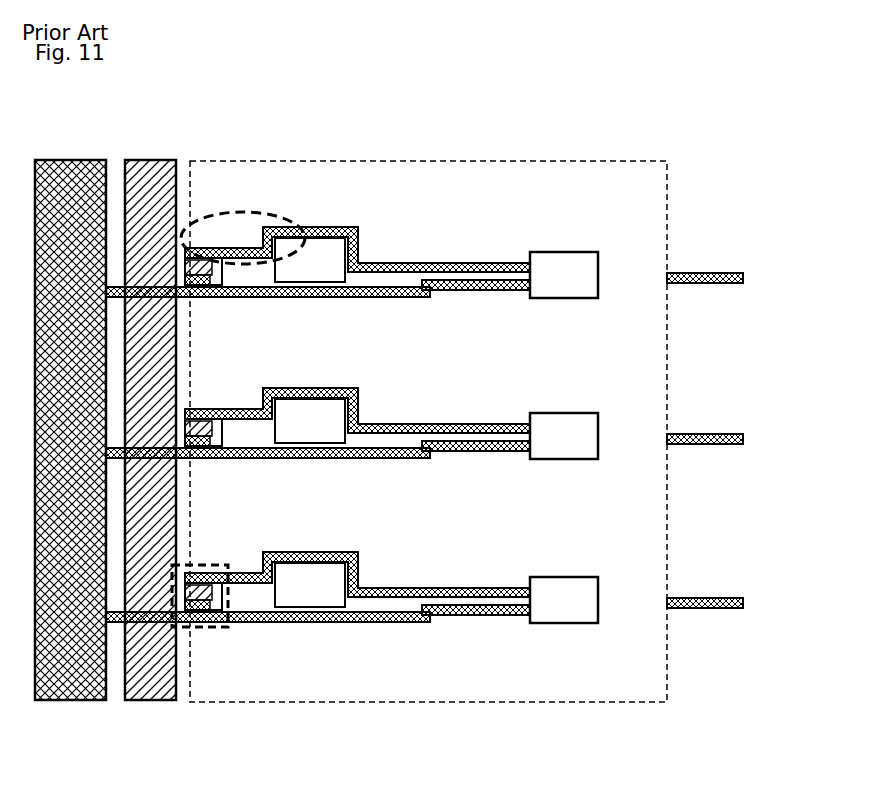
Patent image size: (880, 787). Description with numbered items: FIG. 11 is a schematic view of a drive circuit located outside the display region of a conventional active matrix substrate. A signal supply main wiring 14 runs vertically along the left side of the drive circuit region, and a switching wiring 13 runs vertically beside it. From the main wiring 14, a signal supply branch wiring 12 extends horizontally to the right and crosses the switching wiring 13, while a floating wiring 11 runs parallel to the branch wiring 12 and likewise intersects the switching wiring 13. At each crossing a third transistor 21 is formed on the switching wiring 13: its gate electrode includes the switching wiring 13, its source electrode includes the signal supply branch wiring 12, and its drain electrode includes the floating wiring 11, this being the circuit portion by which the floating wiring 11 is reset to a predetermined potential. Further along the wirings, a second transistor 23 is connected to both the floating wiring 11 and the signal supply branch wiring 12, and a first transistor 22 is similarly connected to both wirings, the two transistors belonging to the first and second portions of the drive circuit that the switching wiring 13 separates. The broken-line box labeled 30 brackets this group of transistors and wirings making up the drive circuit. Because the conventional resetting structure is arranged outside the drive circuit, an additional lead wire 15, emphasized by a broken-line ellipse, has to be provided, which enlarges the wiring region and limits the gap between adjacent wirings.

The floating wiring 11 is at (447, 603).
The signal supply branch wiring 12 is at (370, 620).
The switching wiring 13 is at (147, 700).
The signal supply main wiring 14 is at (65, 700).
The lead wire 15 is at (223, 213).
The third transistor 21 is at (208, 627).
The first transistor 22 is at (563, 610).
The second transistor 23 is at (290, 600).
The pixel region 30 is at (665, 157).